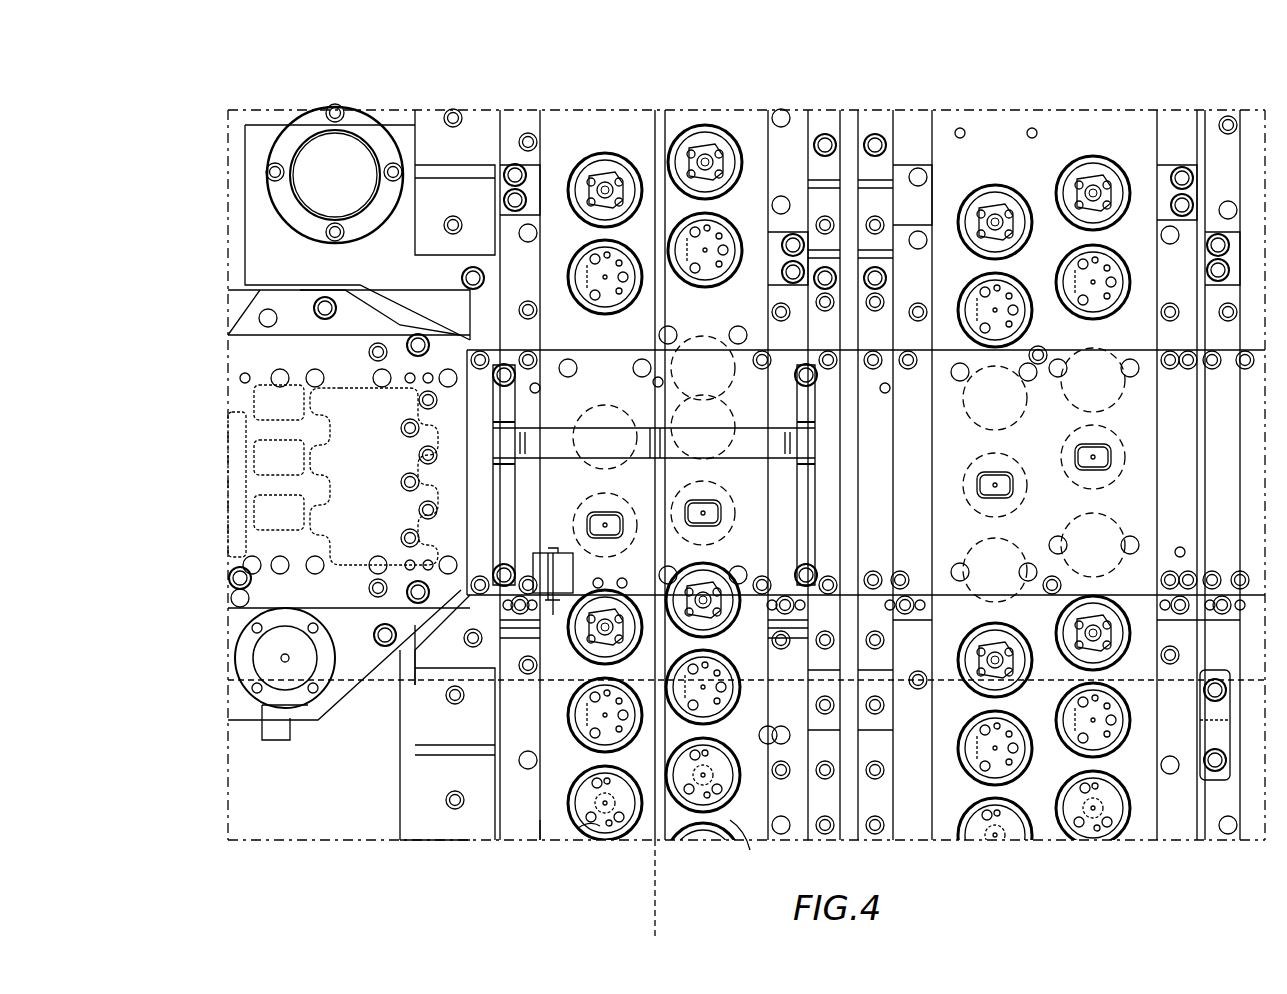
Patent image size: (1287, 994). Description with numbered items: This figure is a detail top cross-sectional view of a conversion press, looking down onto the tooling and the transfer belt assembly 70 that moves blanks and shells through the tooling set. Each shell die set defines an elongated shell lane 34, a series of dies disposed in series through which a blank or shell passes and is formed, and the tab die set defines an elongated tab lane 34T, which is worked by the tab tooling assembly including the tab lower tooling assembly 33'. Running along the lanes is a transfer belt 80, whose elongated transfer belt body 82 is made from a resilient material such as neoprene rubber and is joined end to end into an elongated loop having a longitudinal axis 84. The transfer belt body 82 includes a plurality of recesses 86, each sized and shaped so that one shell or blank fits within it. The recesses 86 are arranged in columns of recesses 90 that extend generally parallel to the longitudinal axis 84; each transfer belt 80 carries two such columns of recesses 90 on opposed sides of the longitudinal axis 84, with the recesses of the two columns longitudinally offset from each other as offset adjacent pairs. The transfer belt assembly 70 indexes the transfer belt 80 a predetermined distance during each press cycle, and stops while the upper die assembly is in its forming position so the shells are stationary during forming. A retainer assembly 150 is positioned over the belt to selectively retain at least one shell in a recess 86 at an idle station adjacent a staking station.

The column of recesses 90 is at (705, 92).
The retainer assembly 150 is at (575, 395).
The tab lane 34T is at (222, 437).
The tab lower tooling assembly 33' is at (335, 703).
The transfer belt assembly 70 is at (555, 838).
The transfer belt body 82 is at (575, 832).
The shell lane 34 is at (705, 862).
The longitudinal axis 84 is at (655, 895).
The recess 86 is at (740, 830).
The transfer belt 80 is at (1130, 845).